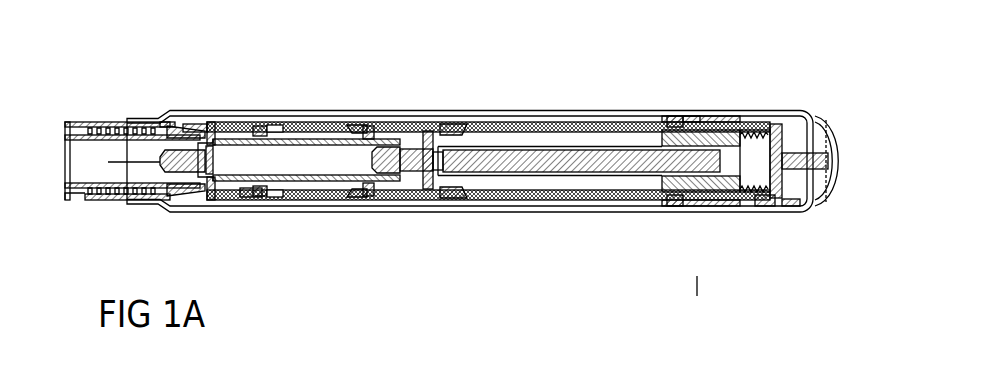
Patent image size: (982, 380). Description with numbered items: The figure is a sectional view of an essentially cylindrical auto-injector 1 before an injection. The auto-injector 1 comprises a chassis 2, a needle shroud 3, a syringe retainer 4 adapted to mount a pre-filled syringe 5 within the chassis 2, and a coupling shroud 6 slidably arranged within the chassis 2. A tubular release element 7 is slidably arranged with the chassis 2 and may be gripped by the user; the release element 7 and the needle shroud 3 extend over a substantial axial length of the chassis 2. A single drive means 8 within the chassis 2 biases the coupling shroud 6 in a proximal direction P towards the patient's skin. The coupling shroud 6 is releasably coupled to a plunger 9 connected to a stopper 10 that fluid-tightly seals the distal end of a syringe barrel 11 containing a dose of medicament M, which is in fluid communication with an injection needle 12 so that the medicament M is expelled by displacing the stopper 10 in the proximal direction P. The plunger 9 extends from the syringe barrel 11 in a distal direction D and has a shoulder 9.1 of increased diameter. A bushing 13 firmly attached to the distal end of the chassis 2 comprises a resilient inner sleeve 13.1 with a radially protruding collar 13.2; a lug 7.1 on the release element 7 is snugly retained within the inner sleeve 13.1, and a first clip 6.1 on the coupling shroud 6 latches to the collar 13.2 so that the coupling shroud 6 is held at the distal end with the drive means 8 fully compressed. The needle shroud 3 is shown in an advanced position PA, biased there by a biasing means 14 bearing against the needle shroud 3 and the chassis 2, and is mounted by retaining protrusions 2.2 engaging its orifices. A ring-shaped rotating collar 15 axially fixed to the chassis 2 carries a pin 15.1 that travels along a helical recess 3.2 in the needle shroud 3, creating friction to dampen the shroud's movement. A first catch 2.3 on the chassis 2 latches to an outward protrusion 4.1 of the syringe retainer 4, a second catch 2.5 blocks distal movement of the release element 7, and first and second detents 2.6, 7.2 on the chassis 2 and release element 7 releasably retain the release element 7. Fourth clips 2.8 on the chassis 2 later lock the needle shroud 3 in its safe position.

The auto-injector 1 is at (282, 23).
The chassis 2 is at (478, 120).
The retaining protrusions 2.2 is at (443, 126).
The first catch 2.3 is at (360, 125).
The second catch 2.5 is at (787, 207).
The first detent 2.6 is at (672, 121).
The fourth clips 2.8 is at (217, 125).
The needle shroud 3 is at (256, 130).
The helical recess 3.2 is at (213, 127).
The syringe retainer 4 is at (299, 212).
The outward protrusion 4.1 is at (372, 127).
The pre-filled syringe 5 is at (248, 201).
The coupling shroud 6 is at (686, 200).
The first clip 6.1 is at (770, 207).
The release element 7 is at (522, 111).
The lug 7.1 is at (827, 198).
The second detent 7.2 is at (686, 118).
The drive means 8 is at (717, 207).
The plunger 9 is at (485, 164).
The shoulder 9.1 is at (667, 207).
The stopper 10 is at (390, 201).
The syringe barrel 11 is at (333, 181).
The injection needle 12 is at (118, 157).
The bushing 13 is at (832, 145).
The inner sleeve 13.1 is at (797, 120).
The collar 13.2 is at (768, 131).
The biasing means 14 is at (119, 202).
The rotating collar 15 is at (182, 204).
The pin 15.1 is at (167, 125).
The advanced position PA is at (80, 129).
The proximal direction P is at (44, 162).
The distal direction D is at (858, 165).
The medicament M is at (300, 160).